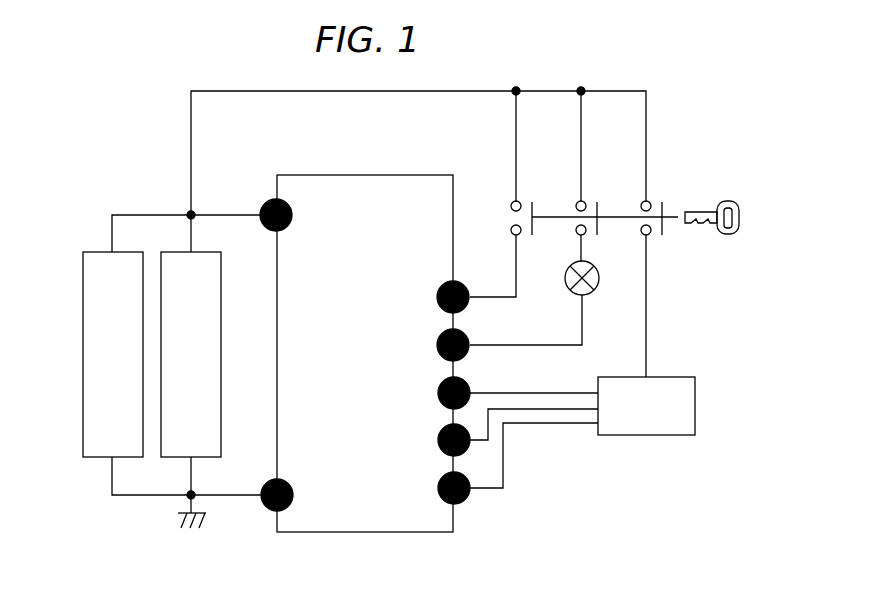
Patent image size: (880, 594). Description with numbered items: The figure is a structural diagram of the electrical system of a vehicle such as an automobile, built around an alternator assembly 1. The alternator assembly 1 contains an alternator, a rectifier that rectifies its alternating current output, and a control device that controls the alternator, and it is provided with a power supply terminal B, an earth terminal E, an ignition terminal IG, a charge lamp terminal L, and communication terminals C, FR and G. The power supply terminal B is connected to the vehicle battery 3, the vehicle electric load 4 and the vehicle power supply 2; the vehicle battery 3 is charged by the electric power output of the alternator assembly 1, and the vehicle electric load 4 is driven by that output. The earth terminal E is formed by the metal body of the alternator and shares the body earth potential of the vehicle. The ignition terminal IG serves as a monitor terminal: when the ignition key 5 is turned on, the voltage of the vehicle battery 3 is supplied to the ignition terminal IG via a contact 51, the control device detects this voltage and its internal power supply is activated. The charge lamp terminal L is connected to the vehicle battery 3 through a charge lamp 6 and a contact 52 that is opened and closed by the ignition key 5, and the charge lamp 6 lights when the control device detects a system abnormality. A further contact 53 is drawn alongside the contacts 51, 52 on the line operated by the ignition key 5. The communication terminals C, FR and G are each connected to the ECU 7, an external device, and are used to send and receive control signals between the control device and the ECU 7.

The alternator assembly 1 is at (367, 532).
The vehicle power supply 2 is at (322, 91).
The vehicle battery 3 is at (83, 355).
The vehicle electric load 4 is at (221, 355).
The ignition key 5 is at (727, 200).
The contact 51 is at (512, 201).
The contact 52 is at (577, 201).
The ECU switch 53 is at (642, 201).
The charge lamp 6 is at (596, 290).
The ECU 7 is at (697, 405).